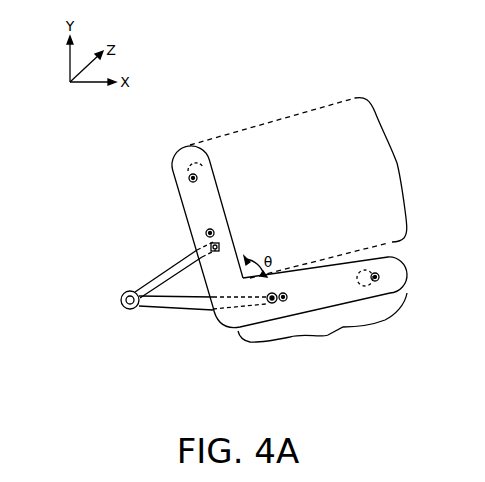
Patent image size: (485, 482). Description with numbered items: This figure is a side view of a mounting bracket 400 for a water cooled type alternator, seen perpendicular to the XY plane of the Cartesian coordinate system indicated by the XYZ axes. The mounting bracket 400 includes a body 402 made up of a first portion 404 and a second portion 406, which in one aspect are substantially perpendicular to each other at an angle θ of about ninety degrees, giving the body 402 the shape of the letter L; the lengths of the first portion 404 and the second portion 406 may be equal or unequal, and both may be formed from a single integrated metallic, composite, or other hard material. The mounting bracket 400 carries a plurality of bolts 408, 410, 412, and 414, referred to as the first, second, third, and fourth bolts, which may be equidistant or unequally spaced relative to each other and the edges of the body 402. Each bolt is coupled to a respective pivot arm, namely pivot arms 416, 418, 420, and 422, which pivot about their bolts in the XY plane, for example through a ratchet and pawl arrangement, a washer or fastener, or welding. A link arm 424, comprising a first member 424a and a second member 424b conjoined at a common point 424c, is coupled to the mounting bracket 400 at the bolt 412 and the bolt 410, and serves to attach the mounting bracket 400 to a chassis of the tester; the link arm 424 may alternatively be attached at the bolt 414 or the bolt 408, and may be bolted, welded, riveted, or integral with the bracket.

The mounting bracket 400 is at (289, 225).
The body 402 is at (211, 188).
The first portion 404 is at (313, 220).
The second portion 406 is at (310, 309).
The bolt 408 is at (378, 276).
The bolt 410 is at (286, 293).
The bolt 412 is at (214, 232).
The bolt 414 is at (187, 179).
The pivot arm 416 is at (366, 272).
The pivot arm 418 is at (268, 311).
The pivot arm 420 is at (197, 234).
The pivot arm 422 is at (182, 165).
The link arm 424 is at (156, 289).
The first member 424a is at (155, 270).
The second member 424b is at (155, 308).
The common point 424c is at (121, 300).